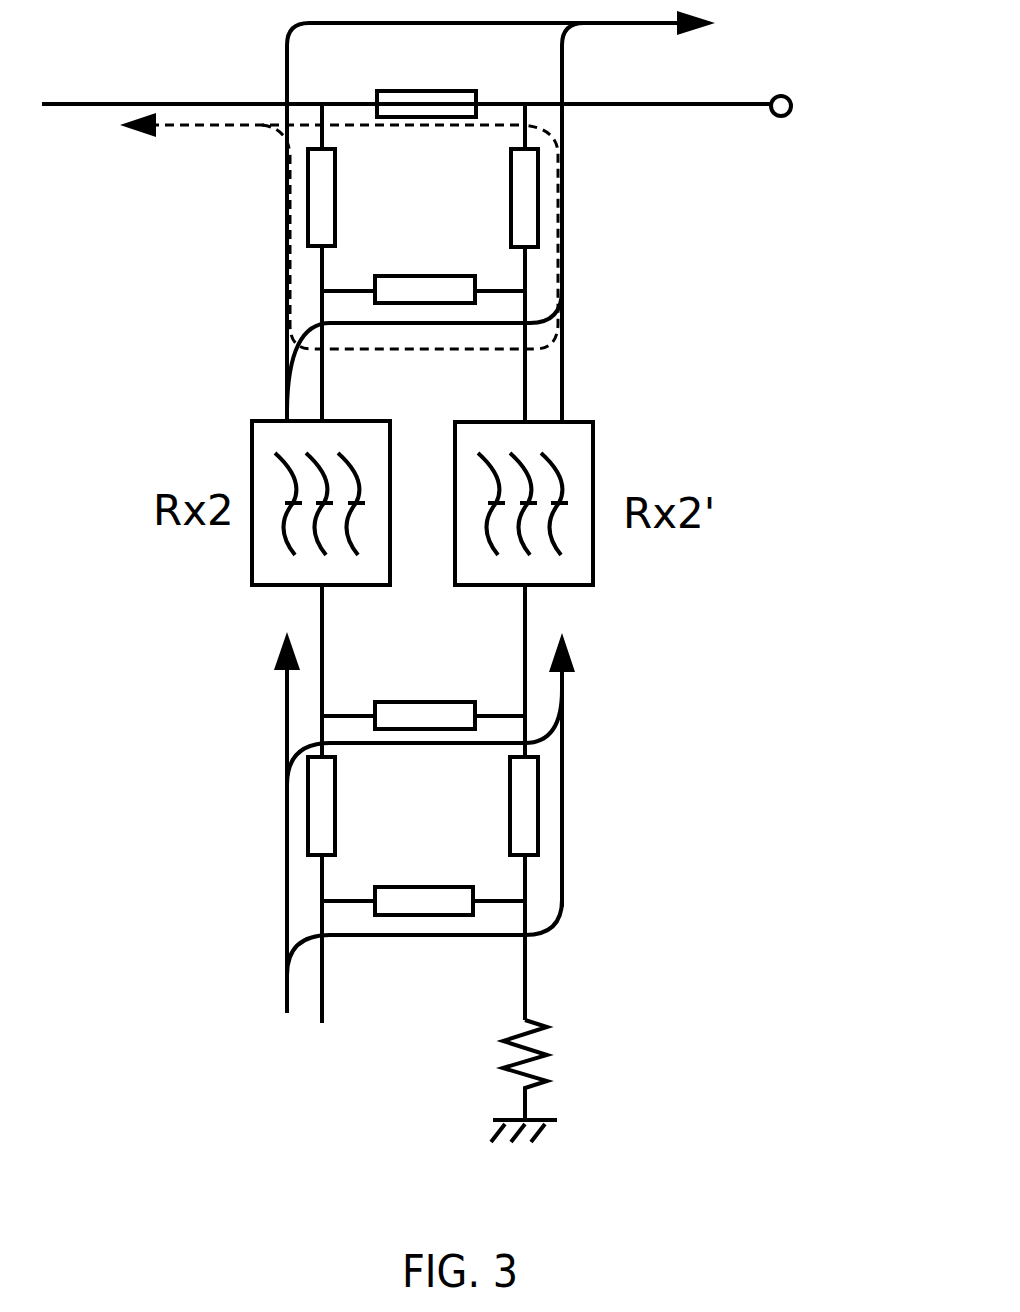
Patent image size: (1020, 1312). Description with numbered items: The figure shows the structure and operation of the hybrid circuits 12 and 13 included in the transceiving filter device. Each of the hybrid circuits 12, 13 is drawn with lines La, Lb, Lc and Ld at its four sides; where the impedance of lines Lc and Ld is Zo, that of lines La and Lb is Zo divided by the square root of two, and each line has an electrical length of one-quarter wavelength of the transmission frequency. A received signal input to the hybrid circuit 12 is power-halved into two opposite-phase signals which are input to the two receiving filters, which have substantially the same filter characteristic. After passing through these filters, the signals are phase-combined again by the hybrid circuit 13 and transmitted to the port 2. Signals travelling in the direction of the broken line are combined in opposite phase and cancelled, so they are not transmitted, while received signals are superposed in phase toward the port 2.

The port 2 is at (429, 78).
The hybrid circuit 12 is at (592, 700).
The hybrid circuit 13 is at (592, 128).